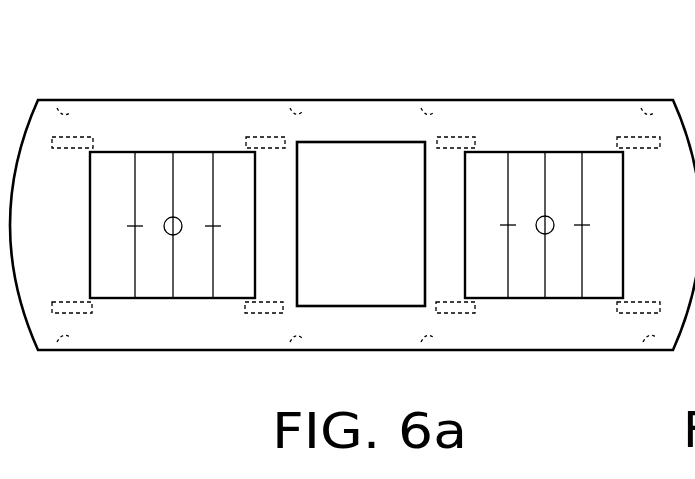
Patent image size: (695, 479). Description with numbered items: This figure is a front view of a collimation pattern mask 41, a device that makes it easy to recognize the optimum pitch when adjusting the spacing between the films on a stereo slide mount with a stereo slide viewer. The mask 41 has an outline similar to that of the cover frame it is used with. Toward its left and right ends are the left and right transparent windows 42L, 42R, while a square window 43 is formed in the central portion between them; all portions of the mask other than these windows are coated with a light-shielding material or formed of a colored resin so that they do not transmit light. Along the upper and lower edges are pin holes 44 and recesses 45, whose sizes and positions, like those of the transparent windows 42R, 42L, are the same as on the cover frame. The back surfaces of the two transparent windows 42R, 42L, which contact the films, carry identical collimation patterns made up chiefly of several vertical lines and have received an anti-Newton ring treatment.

The collimation pattern mask 41 is at (214, 96).
The left transparent window 42L is at (110, 158).
The right transparent window 42R is at (488, 160).
The square window 43 is at (355, 150).
The pin holes 44 is at (57, 108).
The recesses 45 is at (80, 136).